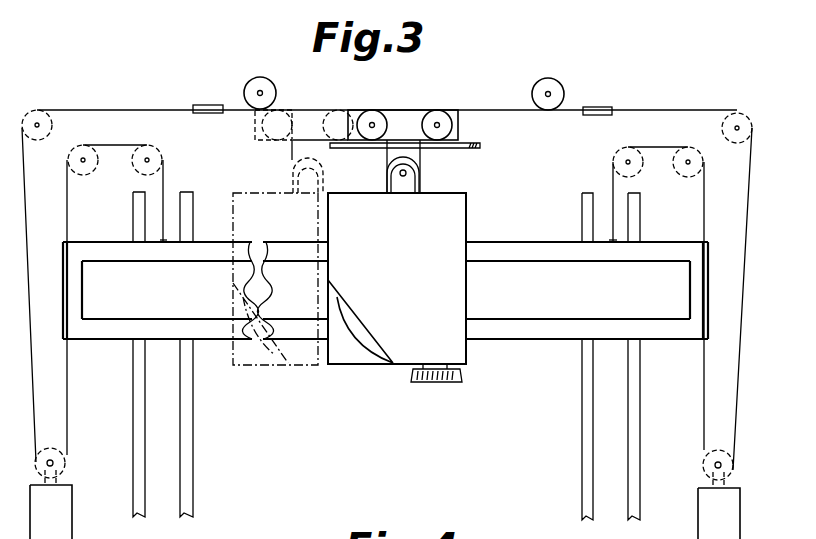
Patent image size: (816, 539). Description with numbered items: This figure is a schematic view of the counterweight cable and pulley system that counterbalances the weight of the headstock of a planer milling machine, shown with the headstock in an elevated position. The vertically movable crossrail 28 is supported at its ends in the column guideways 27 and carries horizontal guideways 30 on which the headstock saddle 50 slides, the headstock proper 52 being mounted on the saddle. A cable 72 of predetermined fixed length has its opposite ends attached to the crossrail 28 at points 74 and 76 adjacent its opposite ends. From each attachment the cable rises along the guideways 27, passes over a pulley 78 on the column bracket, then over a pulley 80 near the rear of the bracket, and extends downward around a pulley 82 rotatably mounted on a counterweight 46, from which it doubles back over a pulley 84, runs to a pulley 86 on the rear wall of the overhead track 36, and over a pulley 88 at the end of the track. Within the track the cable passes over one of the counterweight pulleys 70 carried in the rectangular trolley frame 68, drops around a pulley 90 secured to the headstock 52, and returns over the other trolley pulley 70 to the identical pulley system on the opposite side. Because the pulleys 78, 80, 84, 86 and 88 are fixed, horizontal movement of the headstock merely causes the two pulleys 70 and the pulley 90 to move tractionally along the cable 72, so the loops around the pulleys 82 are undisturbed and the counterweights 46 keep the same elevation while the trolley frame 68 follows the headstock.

The guideways 27 is at (185, 465).
The crossrail 28 is at (533, 298).
The horizontal guideways 30 is at (216, 252).
The overhead track 36 is at (473, 155).
The counterweight 46 is at (73, 511).
The headstock saddle 50 is at (330, 388).
The headstock proper 52 is at (462, 357).
The trolley frame 68 is at (402, 120).
The counterweight pulleys 70 is at (342, 109).
The cable 72 is at (500, 110).
The attachment point 74 is at (613, 241).
The attachment point 76 is at (163, 241).
The pulley 78 is at (148, 147).
The pulley 80 is at (82, 147).
The pulley 82 is at (58, 452).
The pulley 84 is at (40, 110).
The pulley 86 is at (206, 104).
The pulley 88 is at (258, 77).
The headstock pulley 90 is at (300, 162).